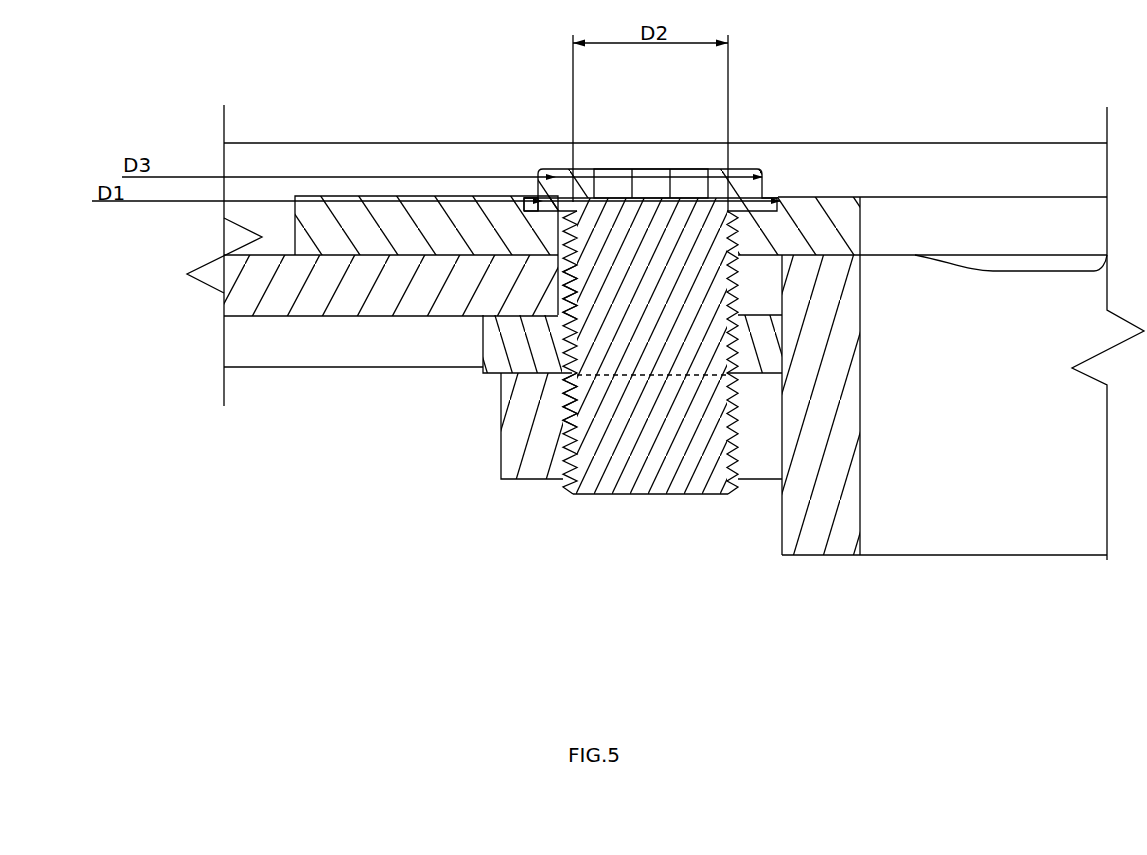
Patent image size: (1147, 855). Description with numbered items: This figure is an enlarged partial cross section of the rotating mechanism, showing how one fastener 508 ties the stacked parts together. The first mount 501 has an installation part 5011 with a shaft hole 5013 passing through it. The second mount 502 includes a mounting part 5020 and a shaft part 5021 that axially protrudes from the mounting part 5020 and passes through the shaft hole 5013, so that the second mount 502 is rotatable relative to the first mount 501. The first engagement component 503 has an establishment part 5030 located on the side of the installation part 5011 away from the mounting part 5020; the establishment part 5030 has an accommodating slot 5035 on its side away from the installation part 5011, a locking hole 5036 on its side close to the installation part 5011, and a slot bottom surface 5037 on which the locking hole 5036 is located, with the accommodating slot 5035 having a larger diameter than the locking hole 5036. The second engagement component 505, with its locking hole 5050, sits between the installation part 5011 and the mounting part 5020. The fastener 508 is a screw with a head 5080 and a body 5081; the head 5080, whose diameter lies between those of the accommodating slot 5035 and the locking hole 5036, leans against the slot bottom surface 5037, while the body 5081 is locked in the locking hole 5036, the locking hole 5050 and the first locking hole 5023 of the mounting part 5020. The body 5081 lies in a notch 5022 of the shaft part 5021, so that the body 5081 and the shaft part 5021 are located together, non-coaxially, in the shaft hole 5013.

The first mount 501 is at (353, 327).
The installation part 5011 is at (280, 298).
The shaft hole 5013 is at (575, 288).
The second mount 502 is at (650, 326).
The mounting part 5020 is at (525, 458).
The shaft part 5021 is at (840, 303).
The notch 5022 is at (773, 370).
The first locking hole 5023 is at (580, 443).
The first engagement component 503 is at (509, 202).
The establishment part 5030 is at (377, 225).
The accommodating slot 5035 is at (528, 188).
The locking hole 5036 is at (620, 198).
The slot bottom surface 5037 is at (561, 194).
The second engagement component 505 is at (593, 384).
The locking hole 5050 is at (565, 405).
The fastener 508 is at (668, 276).
The head 5080 is at (653, 137).
The body 5081 is at (641, 281).